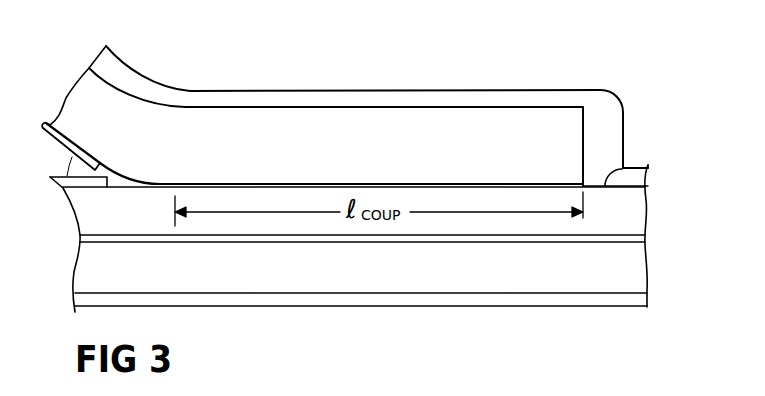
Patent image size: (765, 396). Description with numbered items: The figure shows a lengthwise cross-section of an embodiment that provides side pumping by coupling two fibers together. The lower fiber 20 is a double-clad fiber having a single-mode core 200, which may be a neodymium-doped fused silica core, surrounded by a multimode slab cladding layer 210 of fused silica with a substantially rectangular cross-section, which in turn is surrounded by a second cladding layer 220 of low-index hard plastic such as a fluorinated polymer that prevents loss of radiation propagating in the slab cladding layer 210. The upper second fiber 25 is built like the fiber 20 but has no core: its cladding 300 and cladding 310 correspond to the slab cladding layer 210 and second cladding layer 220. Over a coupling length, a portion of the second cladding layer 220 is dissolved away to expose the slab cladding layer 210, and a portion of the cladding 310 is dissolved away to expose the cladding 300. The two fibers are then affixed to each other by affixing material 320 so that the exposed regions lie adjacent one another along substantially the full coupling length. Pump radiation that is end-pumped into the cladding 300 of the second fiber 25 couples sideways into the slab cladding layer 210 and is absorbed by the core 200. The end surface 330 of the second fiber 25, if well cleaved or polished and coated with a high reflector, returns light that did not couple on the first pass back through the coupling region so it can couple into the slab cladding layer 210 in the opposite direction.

The second fiber 25 is at (208, 52).
The cladding 300 is at (235, 128).
The cladding 310 is at (361, 98).
The affixing material 320 is at (442, 183).
The end surface 330 is at (585, 157).
The fiber 20 is at (312, 341).
The single-mode core 200 is at (163, 238).
The slab cladding layer 210 is at (250, 272).
The second cladding layer 220 is at (432, 300).